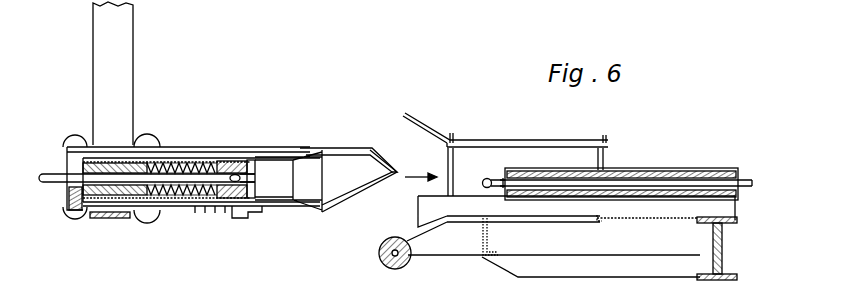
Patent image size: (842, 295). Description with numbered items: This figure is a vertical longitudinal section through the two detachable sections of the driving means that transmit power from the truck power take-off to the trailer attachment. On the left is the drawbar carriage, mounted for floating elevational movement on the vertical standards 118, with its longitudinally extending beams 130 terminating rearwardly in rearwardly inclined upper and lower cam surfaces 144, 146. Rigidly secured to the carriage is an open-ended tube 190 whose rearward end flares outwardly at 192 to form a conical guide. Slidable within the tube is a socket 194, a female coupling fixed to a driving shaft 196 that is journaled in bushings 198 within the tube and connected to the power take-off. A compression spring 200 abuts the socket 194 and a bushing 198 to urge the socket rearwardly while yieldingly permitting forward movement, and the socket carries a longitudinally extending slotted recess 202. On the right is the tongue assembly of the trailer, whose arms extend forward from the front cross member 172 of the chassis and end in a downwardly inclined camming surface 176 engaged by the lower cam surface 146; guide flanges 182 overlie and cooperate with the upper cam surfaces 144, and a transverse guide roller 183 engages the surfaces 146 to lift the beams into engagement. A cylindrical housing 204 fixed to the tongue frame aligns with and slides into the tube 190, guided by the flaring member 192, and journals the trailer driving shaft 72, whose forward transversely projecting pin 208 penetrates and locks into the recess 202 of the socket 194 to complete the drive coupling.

The driving shaft 72 is at (747, 180).
The vertical standards 118 is at (120, 62).
The longitudinally extending beams 130 is at (237, 150).
The upper cam surface 144 is at (378, 150).
The lower cam surface 146 is at (349, 202).
The front cross member 172 is at (720, 253).
The downwardly inclined camming surface 176 is at (435, 222).
The guide flanges 182 is at (417, 123).
The guide roller 183 is at (405, 267).
The tube 190 is at (178, 162).
The flaring end 192 is at (313, 193).
The socket 194 is at (240, 204).
The driving shaft 196 is at (185, 180).
The bushings 198 is at (120, 197).
The compression spring 200 is at (200, 165).
The slotted recess 202 is at (257, 168).
The cylindrical housing 204 is at (683, 169).
The transversely projecting pin 208 is at (487, 178).